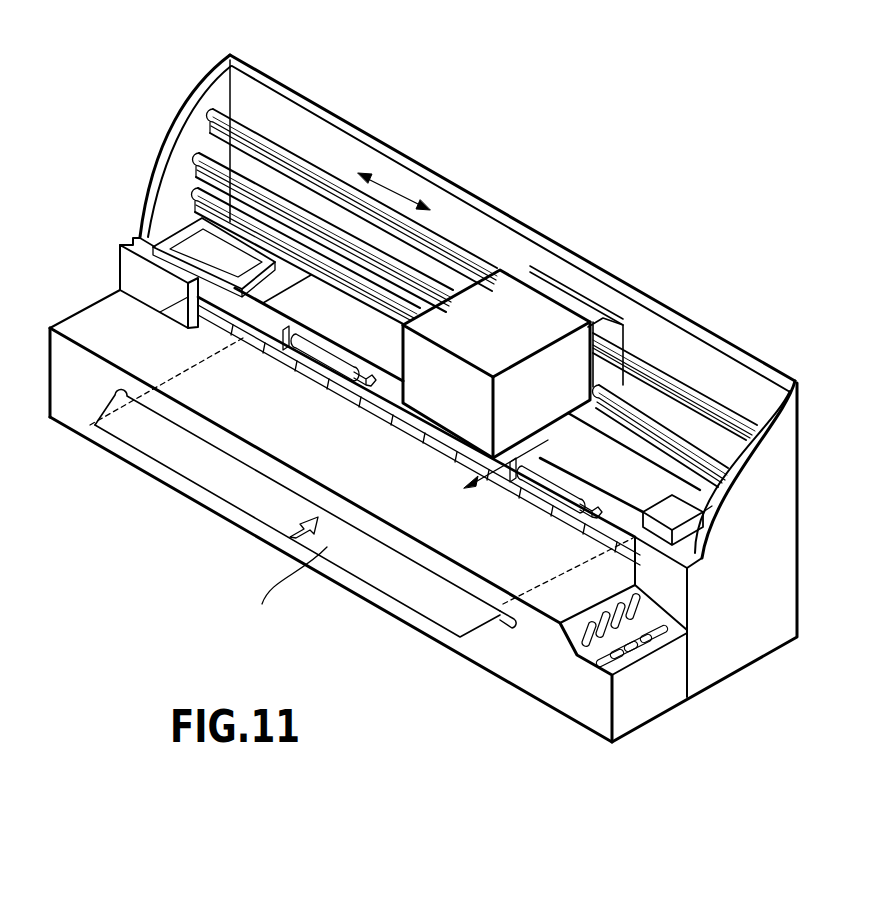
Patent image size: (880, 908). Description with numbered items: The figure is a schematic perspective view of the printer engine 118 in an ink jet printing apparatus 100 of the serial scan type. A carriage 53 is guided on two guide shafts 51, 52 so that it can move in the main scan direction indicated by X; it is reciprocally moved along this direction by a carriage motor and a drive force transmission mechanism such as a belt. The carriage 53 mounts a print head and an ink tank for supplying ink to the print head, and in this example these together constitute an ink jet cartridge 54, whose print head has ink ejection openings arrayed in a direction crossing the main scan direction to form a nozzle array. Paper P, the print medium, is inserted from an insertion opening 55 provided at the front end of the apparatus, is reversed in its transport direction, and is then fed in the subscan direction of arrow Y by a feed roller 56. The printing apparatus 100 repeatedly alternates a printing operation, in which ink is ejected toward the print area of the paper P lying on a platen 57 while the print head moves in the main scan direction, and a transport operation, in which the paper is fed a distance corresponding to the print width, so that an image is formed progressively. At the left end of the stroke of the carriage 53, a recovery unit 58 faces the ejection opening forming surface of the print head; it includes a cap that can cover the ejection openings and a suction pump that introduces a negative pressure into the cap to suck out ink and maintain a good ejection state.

The ink jet printing apparatus 100 is at (165, 488).
The printer engine 118 is at (413, 128).
The guide shaft 51 is at (217, 108).
The guide shaft 52 is at (200, 157).
The carriage 53 is at (606, 373).
The ink jet cartridge 54 is at (513, 270).
The insertion opening 55 is at (512, 628).
The feed roller 56 is at (200, 195).
The platen 57 is at (184, 283).
The recovery unit 58 is at (197, 248).